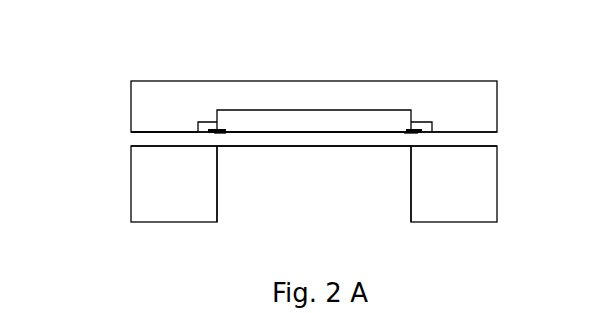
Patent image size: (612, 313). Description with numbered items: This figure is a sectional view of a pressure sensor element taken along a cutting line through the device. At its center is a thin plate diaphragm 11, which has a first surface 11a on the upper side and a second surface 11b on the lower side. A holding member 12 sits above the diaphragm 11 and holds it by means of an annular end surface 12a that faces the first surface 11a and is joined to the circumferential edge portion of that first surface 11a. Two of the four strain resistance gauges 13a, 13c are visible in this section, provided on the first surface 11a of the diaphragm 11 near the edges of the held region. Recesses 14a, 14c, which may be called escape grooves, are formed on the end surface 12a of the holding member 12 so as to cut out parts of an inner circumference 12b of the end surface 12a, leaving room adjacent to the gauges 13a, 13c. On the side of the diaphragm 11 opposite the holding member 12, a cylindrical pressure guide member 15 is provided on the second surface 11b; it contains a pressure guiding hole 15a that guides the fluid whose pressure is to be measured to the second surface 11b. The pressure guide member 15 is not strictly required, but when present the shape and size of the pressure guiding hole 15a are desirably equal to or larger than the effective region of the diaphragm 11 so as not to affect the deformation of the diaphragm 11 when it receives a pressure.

The holding member 12 is at (500, 95).
The annular end surface 12a is at (160, 134).
The inner circumference 12b is at (222, 126).
The diaphragm 11 is at (500, 138).
The first surface 11a is at (297, 132).
The second surface 11b is at (323, 147).
The strain resistance gauge 13a is at (407, 130).
The strain resistance gauge 13c is at (225, 130).
The recess 14a is at (408, 128).
The recess 14c is at (220, 128).
The pressure guide member 15 is at (502, 185).
The pressure guiding hole 15a is at (365, 200).